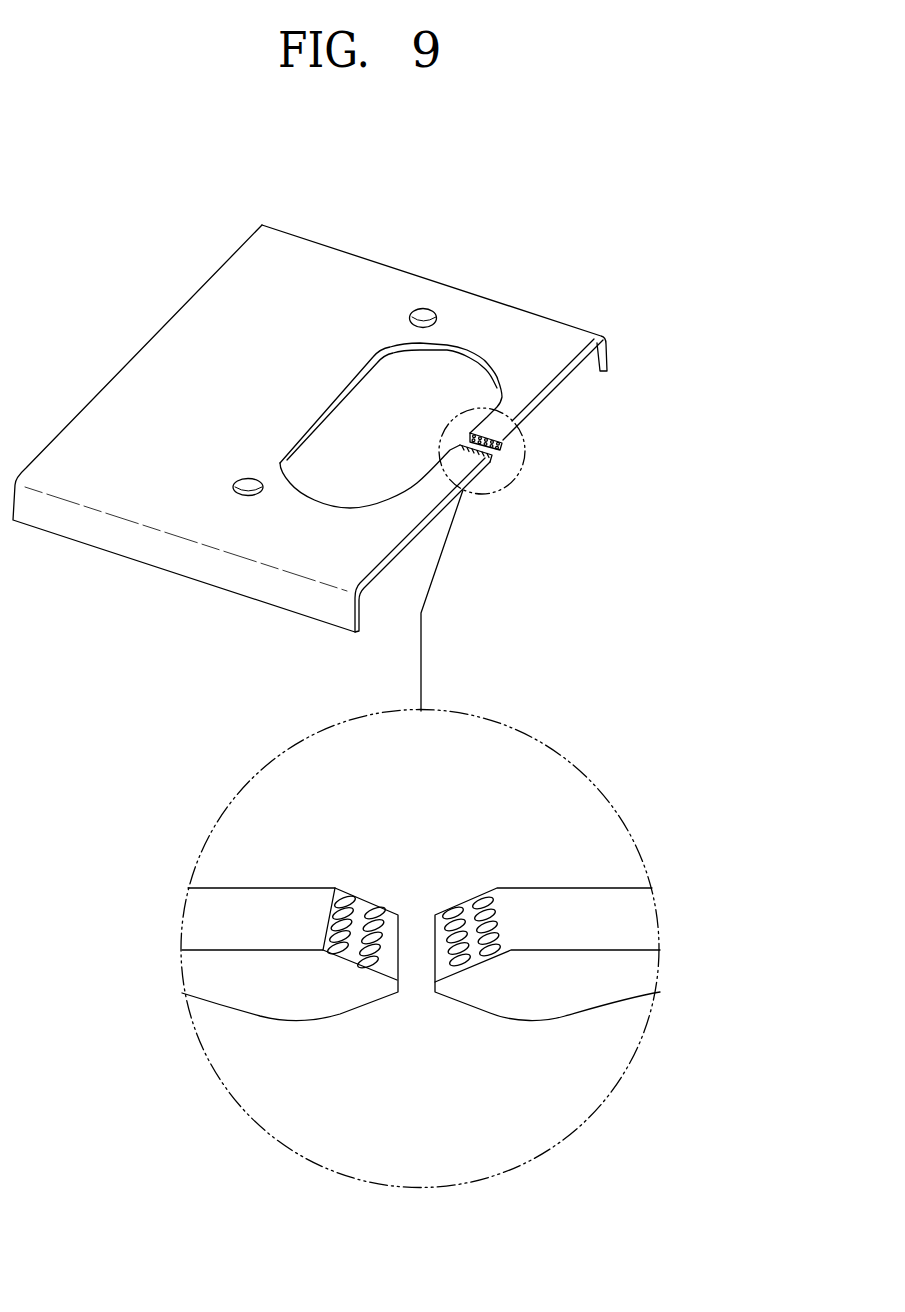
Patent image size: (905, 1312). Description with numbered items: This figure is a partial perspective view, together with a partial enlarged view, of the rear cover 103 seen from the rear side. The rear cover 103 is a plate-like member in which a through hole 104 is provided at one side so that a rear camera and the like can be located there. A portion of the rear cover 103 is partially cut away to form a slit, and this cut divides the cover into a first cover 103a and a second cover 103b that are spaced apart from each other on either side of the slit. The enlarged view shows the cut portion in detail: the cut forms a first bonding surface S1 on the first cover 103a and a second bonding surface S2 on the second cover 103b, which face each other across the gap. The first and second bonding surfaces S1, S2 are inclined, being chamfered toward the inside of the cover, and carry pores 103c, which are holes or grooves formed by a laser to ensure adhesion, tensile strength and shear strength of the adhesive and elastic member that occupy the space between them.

The rear cover 103 is at (363, 267).
The through hole 104 is at (432, 388).
The first cover 103a is at (192, 922).
The second cover 103b is at (648, 922).
The pores 103c is at (337, 920).
The first bonding surface S1 is at (365, 907).
The second bonding surface S2 is at (470, 907).